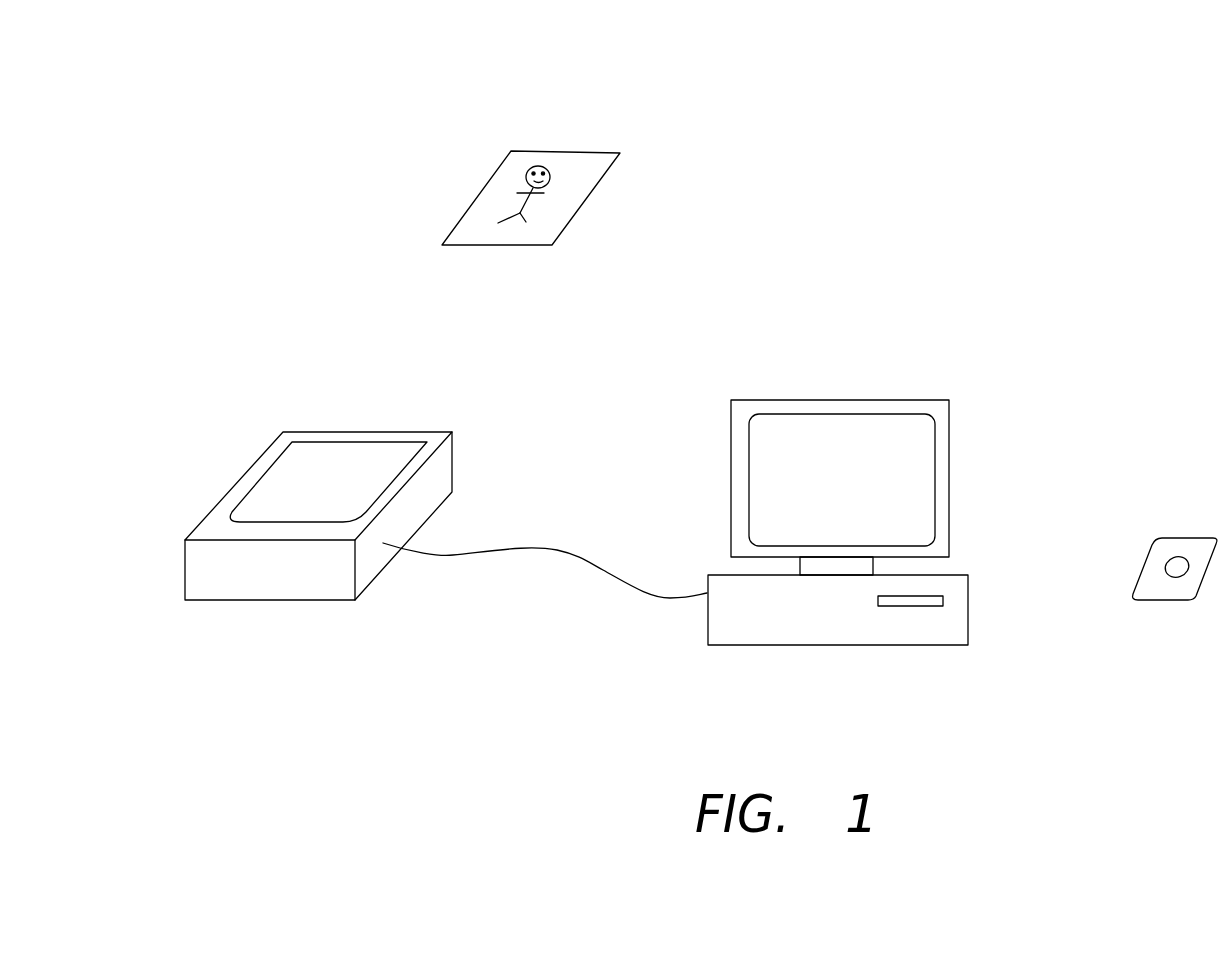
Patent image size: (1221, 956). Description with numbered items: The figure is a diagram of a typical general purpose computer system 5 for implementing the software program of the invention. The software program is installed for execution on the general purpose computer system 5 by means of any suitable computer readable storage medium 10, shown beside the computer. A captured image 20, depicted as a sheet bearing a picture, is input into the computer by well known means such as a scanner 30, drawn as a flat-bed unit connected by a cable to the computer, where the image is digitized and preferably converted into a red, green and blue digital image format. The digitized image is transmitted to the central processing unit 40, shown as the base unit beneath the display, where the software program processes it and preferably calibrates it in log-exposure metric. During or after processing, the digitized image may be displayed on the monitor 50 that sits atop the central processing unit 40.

The general purpose computer system 5 is at (830, 368).
The computer readable storage medium 10 is at (1170, 547).
The captured image 20 is at (582, 163).
The scanner 30 is at (355, 453).
The central processing unit 40 is at (852, 622).
The monitor 50 is at (947, 442).